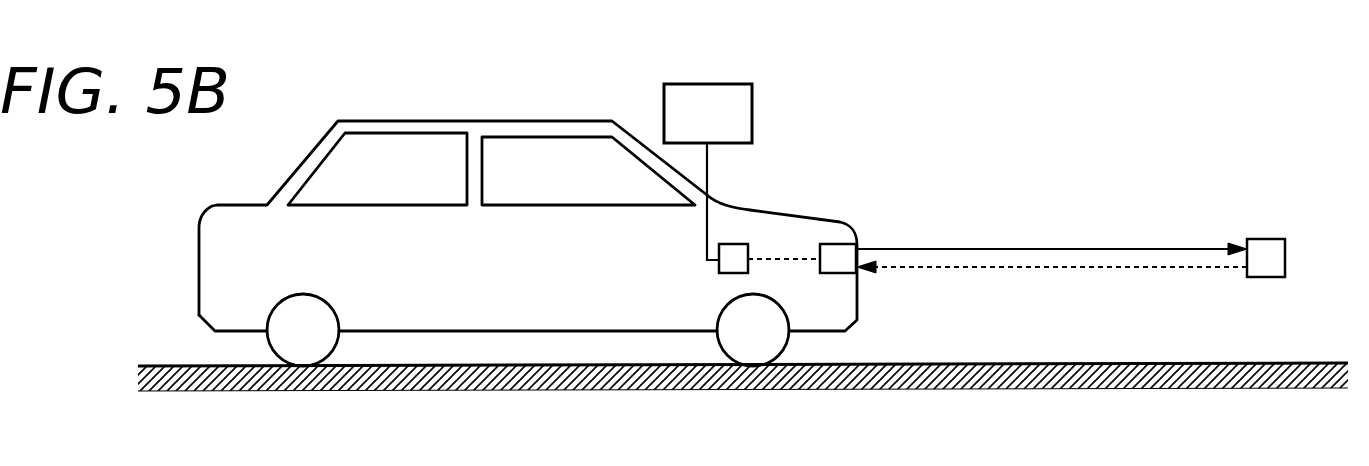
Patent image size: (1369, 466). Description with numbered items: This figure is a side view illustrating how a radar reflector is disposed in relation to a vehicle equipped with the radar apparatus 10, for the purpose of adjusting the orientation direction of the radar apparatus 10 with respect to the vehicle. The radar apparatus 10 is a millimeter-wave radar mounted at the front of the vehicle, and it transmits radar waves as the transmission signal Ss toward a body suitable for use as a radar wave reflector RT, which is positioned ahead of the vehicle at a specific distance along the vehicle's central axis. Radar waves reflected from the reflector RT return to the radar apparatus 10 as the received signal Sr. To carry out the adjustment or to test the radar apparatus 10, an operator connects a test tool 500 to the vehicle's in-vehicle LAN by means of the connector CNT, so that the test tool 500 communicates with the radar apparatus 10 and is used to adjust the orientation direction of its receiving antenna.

The test tool 500 is at (752, 113).
The connector CNT is at (733, 244).
The radar apparatus 10 is at (843, 244).
The transmission signal Ss is at (1053, 249).
The received signal Sr is at (1053, 268).
The radar wave reflector RT is at (1267, 239).